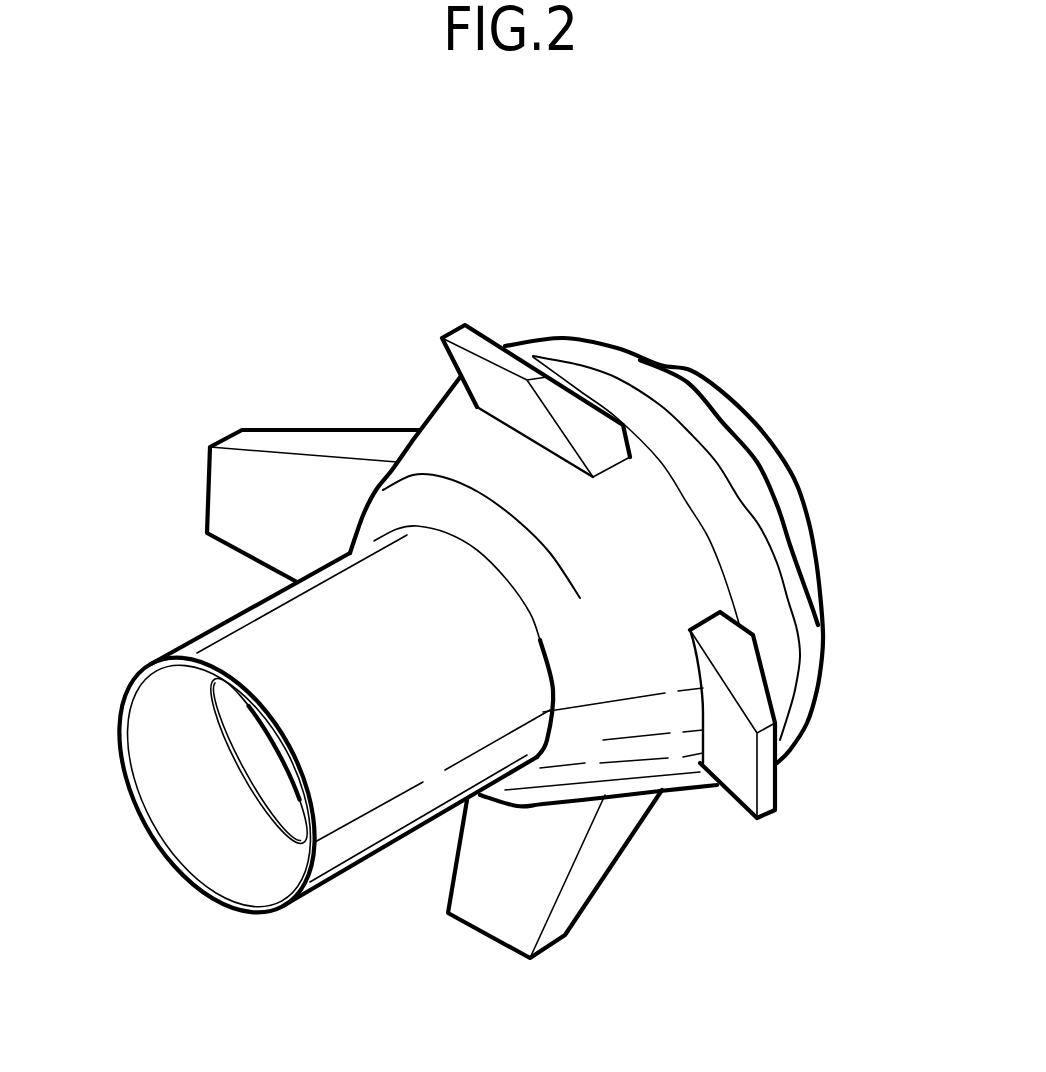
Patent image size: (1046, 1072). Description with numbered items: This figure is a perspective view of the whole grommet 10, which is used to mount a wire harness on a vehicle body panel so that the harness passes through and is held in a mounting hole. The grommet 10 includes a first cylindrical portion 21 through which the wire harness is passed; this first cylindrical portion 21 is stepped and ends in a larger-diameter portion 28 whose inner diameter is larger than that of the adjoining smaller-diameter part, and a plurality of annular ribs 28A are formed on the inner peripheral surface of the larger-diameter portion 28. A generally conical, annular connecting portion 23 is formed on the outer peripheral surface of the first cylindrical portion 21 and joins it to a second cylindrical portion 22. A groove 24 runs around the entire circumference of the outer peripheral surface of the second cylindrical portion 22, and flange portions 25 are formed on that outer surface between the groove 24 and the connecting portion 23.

The grommet 10 is at (774, 303).
The first cylindrical portion 21 is at (335, 877).
The second cylindrical portion 22 is at (758, 446).
The connecting portion 23 is at (627, 643).
The groove 24 is at (742, 553).
The flange portions 25 is at (495, 373).
The larger-diameter portion 28 is at (140, 830).
The annular ribs 28A is at (280, 800).